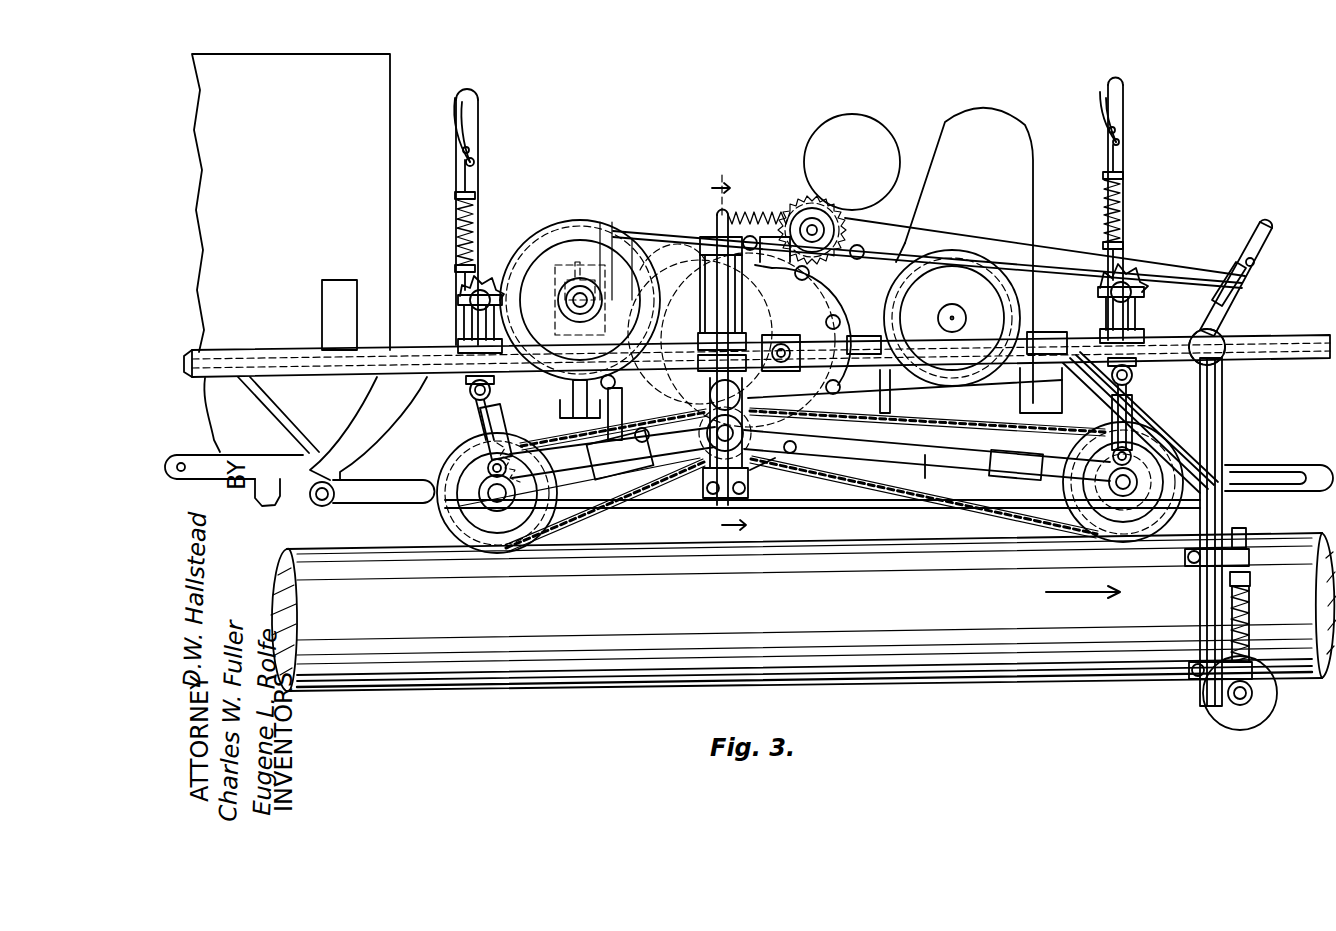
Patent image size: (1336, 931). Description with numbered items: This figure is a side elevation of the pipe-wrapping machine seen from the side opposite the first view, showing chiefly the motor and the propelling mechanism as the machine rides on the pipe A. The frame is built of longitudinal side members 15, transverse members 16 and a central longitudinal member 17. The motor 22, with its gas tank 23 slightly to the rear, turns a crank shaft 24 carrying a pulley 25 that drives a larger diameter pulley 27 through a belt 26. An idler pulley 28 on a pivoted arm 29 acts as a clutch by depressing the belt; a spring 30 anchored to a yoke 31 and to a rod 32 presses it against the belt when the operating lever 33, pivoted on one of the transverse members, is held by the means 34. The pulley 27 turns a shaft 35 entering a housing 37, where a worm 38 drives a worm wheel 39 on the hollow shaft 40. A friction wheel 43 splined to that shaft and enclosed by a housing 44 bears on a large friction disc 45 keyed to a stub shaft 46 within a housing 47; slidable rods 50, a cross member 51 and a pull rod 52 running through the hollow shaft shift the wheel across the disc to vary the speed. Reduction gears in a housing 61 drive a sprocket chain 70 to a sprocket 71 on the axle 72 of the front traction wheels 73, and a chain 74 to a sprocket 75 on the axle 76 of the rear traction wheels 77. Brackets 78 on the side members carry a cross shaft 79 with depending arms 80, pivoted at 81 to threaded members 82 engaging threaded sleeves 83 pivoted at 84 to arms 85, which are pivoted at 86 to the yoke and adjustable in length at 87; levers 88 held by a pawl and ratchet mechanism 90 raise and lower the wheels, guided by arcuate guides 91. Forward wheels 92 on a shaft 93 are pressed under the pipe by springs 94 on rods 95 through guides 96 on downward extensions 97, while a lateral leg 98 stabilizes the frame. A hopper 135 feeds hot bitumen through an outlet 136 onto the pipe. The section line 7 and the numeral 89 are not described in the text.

The section line 7-7 / vertical shaft 7 is at (737, 350).
The longitudinal side members 15 is at (1276, 343).
The transverse members 16 is at (1232, 352).
The central longitudinal member 17 is at (848, 504).
The motor 22 is at (1010, 112).
The gas tank 23 is at (858, 120).
The crank shaft 24 is at (955, 310).
The pulley 25 is at (1020, 300).
The belt 26 is at (667, 235).
The larger diameter pulley 27 is at (558, 228).
The idler pulley 28 is at (790, 200).
The pivoted arm 29 is at (896, 226).
The spring 30 is at (760, 214).
The yoke 31 is at (700, 240).
The rod 32 is at (1044, 244).
The operating lever 33 is at (1256, 230).
The holding means 34 is at (1238, 297).
The shaft 35 is at (574, 290).
The housing 37 is at (563, 388).
The worm 38 is at (560, 300).
The worm wheel 39 is at (564, 302).
The hollow shaft 40 is at (196, 347).
The friction wheel 43 is at (614, 215).
The housing 44 is at (672, 200).
The friction disc 45 is at (803, 315).
The stub shaft 46 is at (694, 282).
The housing 47 is at (828, 402).
The slidable rods 50 is at (655, 470).
The cross member 51 is at (690, 470).
The pull rod 52 is at (193, 415).
The housing 61 is at (786, 420).
The sprocket chain 70 is at (950, 490).
The sprocket 71 is at (1085, 500).
The axle 72 is at (1130, 500).
The front traction wheels 73 is at (1228, 470).
The chain 74 is at (583, 485).
The sprocket 75 is at (530, 545).
The axle 76 is at (496, 512).
The rear traction wheels 77 is at (470, 548).
The brackets 78 is at (462, 318).
The cross shaft 79 is at (470, 292).
The depending arms 80 is at (470, 390).
The pivot 81 is at (478, 403).
The threaded members 82 is at (498, 415).
The threaded sleeves 83 is at (488, 466).
The pivot 84 is at (488, 500).
The arms 85 is at (562, 490).
The pivot 86 is at (722, 500).
The length adjusting means 87 is at (620, 472).
The levers 88 is at (462, 180).
The post 89 is at (480, 170).
The pawl and ratchet mechanism 90 is at (460, 262).
The arcuate guides 91 is at (506, 440).
The wheels 92 is at (1266, 722).
The shaft 93 is at (1238, 706).
The springs 94 is at (1251, 610).
The rods 95 is at (1250, 534).
The yokes or guides 96 is at (1254, 560).
The downward extensions 97 is at (1205, 615).
The leg or axle 98 is at (786, 344).
The tank or hopper 135 is at (380, 62).
The outlet 136 is at (300, 457).
The pipe A is at (632, 692).